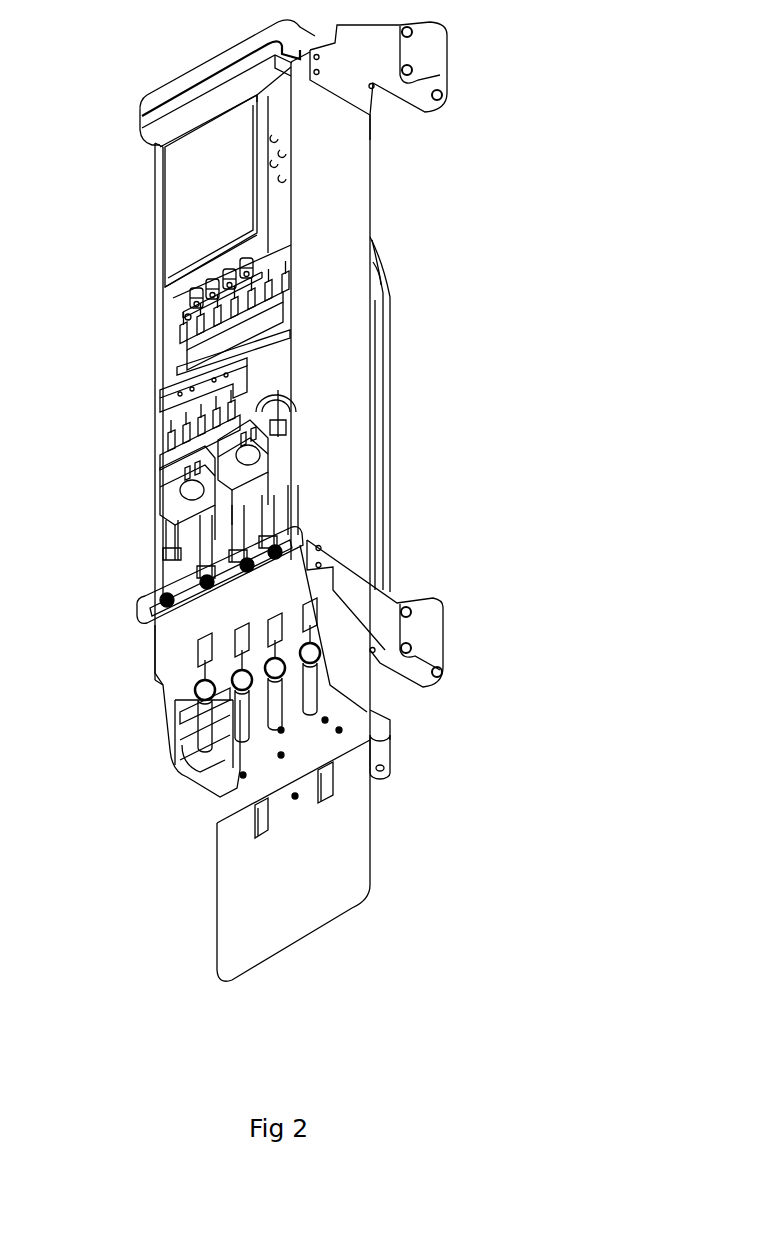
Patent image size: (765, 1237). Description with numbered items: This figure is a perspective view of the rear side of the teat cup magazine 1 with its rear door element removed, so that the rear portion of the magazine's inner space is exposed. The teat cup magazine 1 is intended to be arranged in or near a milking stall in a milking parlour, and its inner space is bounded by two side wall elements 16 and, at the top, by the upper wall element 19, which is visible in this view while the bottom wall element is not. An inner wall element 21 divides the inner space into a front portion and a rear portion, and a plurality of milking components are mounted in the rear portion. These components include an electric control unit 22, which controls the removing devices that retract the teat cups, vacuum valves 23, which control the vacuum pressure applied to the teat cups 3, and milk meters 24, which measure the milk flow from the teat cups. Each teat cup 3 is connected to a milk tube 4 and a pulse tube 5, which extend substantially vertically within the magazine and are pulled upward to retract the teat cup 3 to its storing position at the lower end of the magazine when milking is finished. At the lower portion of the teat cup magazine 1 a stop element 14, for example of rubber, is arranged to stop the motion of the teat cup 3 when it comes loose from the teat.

The teat cup magazine 1 is at (428, 375).
The teat cup 3 is at (384, 750).
The milk tube 4 is at (378, 467).
The pulse tube 5 is at (373, 484).
The stop element 14 is at (325, 860).
The side wall element 16 is at (340, 206).
The upper wall element 19 is at (195, 76).
The inner wall element 21 is at (188, 331).
The electric control unit 22 is at (196, 190).
The vacuum valves 23 is at (188, 358).
The milk meters 24 is at (197, 727).